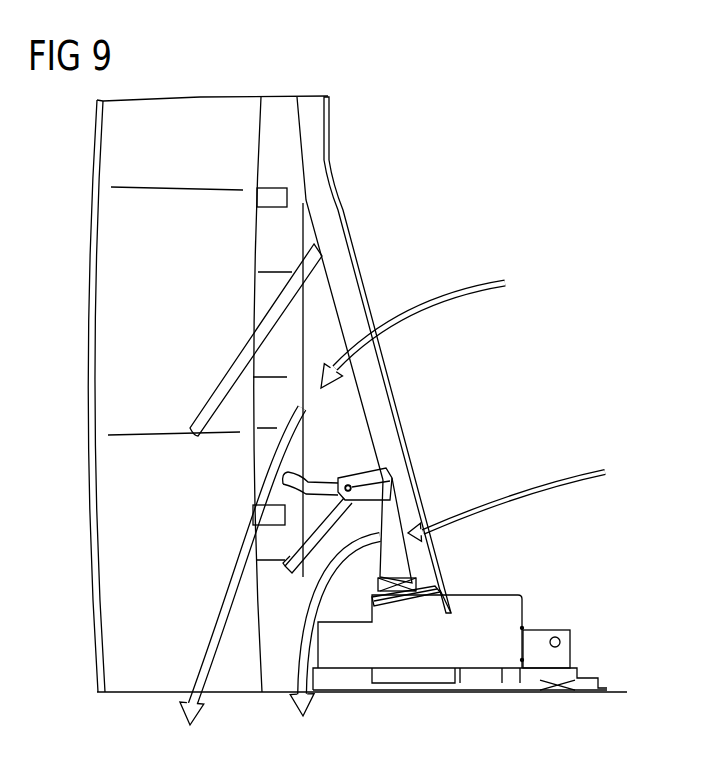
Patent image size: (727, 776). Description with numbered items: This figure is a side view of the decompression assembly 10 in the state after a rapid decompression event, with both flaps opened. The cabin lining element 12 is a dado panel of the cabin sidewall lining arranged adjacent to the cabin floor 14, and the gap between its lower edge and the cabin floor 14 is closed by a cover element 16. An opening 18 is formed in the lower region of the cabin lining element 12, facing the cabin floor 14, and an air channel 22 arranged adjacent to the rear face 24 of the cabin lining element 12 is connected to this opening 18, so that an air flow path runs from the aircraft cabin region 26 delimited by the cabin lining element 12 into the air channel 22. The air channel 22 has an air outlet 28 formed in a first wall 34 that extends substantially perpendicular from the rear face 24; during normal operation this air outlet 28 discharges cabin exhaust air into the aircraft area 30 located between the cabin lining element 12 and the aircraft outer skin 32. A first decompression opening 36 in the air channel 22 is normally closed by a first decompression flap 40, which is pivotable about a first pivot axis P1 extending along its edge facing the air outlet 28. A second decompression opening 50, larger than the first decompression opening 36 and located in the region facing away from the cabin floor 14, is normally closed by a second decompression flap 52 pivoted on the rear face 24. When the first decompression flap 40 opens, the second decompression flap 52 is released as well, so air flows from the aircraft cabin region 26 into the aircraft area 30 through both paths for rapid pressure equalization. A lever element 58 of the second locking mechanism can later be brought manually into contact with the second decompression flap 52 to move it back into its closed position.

The decompression assembly 10 is at (590, 268).
The cabin lining element 12 is at (318, 123).
The cabin floor 14 is at (513, 686).
The cover element 16 is at (515, 606).
The opening 18 is at (447, 574).
The air channel 22 is at (405, 600).
The rear face 24 is at (294, 113).
The aircraft cabin region 26 is at (484, 452).
The air outlet 28 is at (355, 472).
The aircraft area 30 is at (118, 334).
The aircraft outer skin 32 is at (90, 247).
The first wall 34 is at (362, 455).
The first decompression opening 36 is at (373, 571).
The first decompression flap 40 is at (292, 557).
The second decompression opening 50 is at (366, 291).
The second decompression flap 52 is at (243, 353).
The lever element 58 is at (283, 479).
The first pivot axis P1 is at (383, 485).